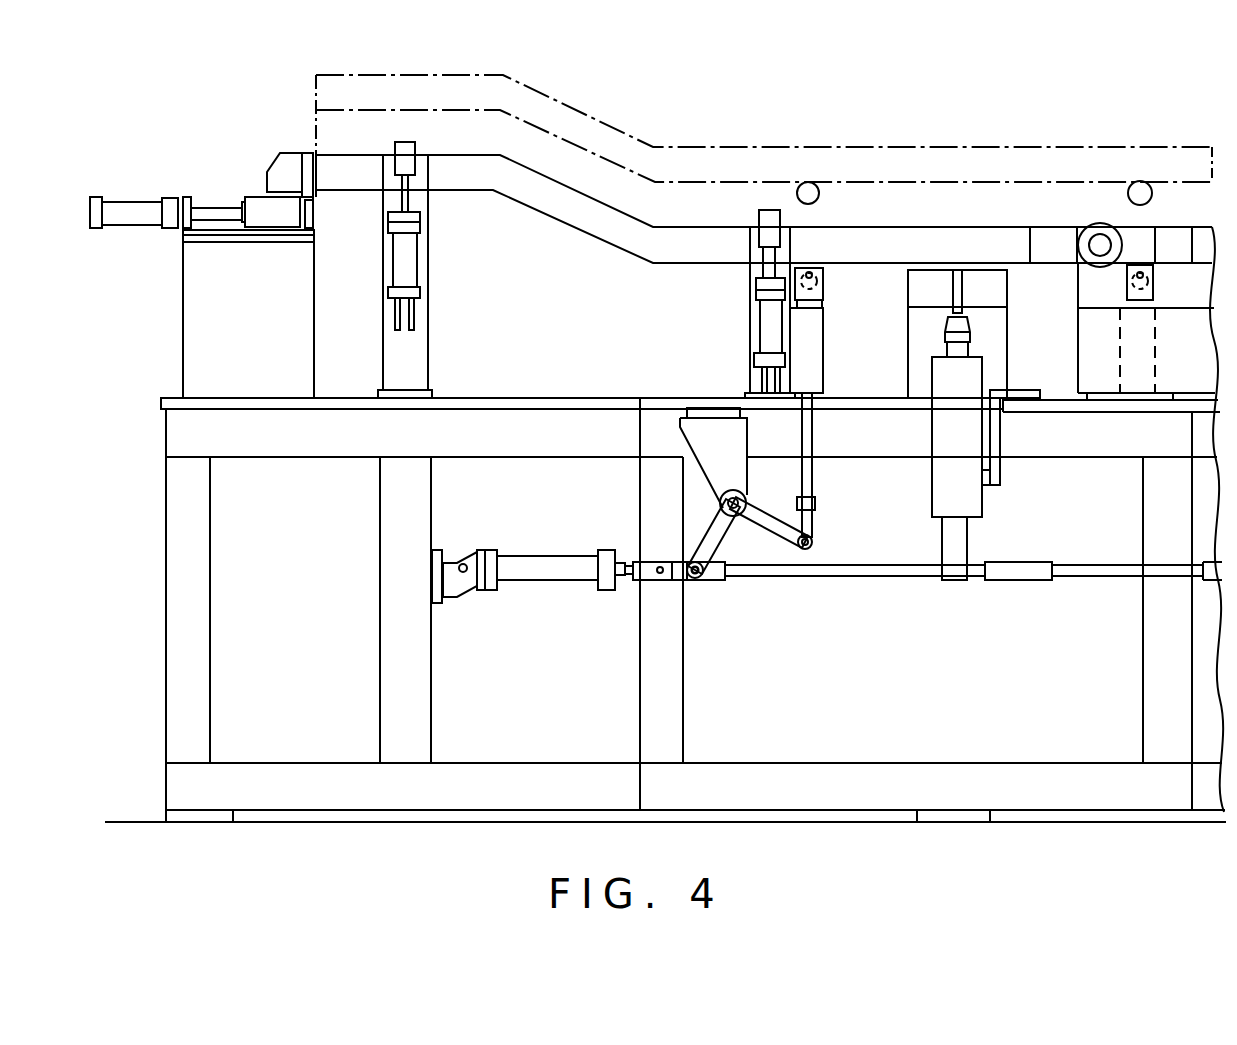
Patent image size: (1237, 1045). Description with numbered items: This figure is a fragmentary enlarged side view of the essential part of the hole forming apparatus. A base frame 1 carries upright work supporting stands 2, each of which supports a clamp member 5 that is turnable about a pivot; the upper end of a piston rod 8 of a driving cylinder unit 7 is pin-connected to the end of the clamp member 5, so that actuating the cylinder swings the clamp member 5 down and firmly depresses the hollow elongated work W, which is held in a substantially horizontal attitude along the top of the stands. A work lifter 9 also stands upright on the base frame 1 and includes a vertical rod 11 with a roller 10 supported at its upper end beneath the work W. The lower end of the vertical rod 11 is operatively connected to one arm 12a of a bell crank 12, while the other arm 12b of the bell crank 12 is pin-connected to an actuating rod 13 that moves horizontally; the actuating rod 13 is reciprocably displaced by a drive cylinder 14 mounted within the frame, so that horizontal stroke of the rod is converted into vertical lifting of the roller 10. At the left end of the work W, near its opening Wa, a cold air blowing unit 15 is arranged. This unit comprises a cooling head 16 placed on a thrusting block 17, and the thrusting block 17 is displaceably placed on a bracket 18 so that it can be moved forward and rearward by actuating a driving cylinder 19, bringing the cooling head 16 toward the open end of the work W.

The base frame 1 is at (166, 675).
The work supporting stand 2 is at (402, 352).
The clamp member 5 is at (408, 152).
The driving cylinder unit 7 is at (410, 263).
The piston rod 8 is at (408, 200).
The work lifter 9 is at (815, 347).
The roller 10 is at (808, 183).
The vertical rod 11 is at (805, 437).
The bell crank 12 is at (735, 529).
The arm of bell crank 12a is at (780, 533).
The arm of bell crank 12b is at (713, 533).
The actuating rod 13 is at (863, 578).
The drive cylinder 14 is at (541, 577).
The cold air blowing unit 15 is at (240, 128).
The cooling head 16 is at (288, 158).
The thrusting block 17 is at (250, 197).
The bracket 18 is at (195, 335).
The driving cylinder 19 is at (125, 203).
The hollow elongated work W is at (577, 198).
The workpiece end Wa is at (308, 84).